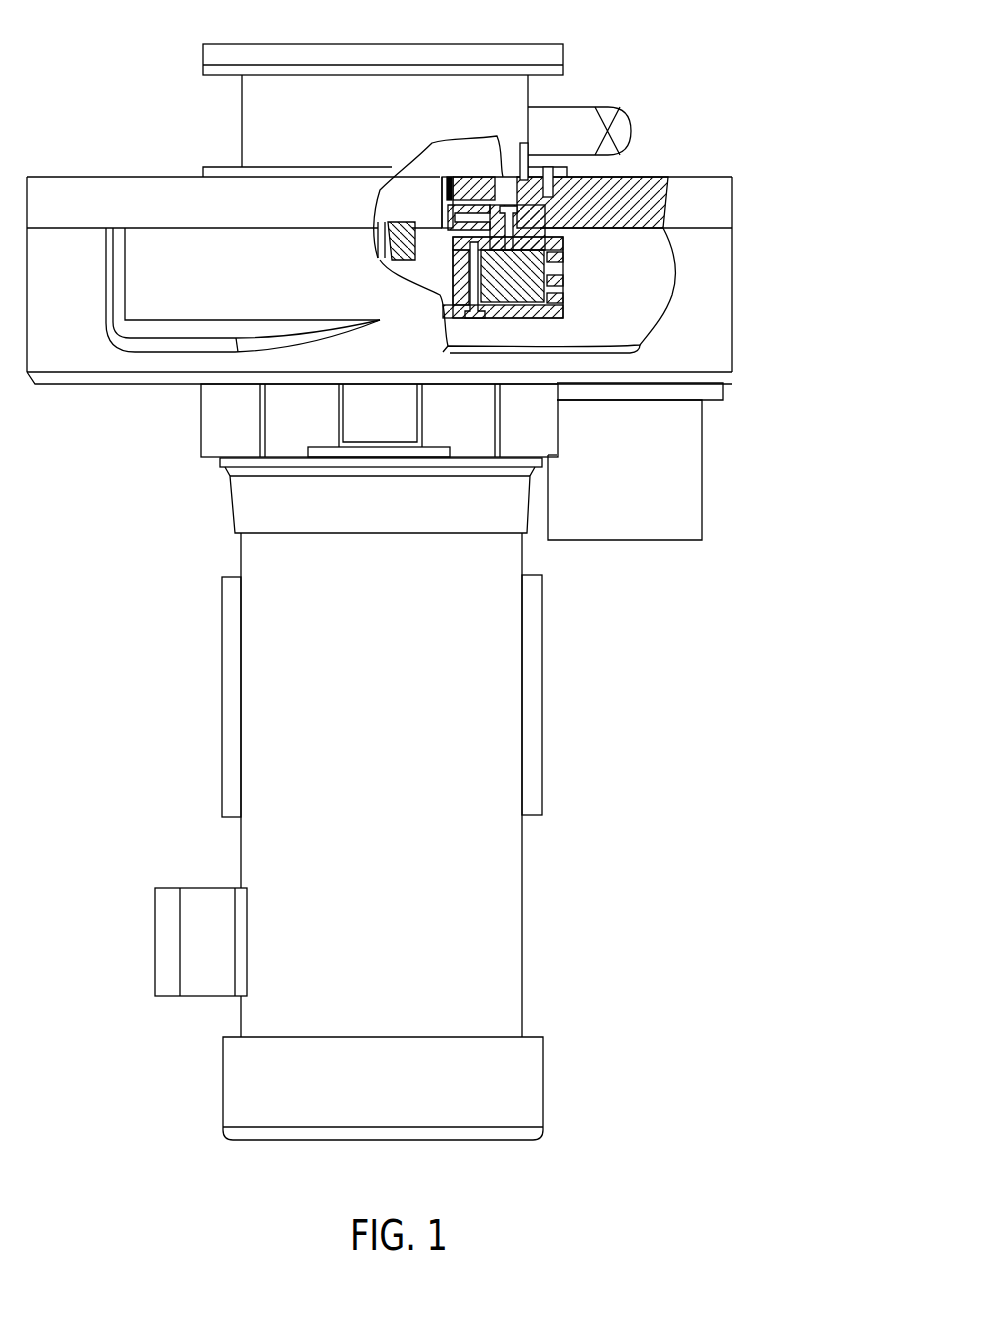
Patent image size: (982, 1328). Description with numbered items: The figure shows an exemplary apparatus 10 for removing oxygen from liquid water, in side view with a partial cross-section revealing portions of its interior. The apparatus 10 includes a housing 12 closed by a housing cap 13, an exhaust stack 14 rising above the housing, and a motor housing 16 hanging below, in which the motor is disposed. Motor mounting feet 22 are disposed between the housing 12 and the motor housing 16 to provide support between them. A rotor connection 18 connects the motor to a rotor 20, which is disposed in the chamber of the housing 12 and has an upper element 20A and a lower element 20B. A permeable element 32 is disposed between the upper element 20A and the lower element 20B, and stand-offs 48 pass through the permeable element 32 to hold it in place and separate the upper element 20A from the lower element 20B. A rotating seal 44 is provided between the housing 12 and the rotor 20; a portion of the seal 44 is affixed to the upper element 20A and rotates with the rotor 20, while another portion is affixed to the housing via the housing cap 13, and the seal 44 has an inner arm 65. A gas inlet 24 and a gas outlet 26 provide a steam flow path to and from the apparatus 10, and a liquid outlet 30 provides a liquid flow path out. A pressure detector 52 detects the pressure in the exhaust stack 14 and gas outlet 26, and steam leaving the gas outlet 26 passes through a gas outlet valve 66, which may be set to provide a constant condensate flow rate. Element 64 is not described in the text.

The apparatus 10 is at (738, 105).
The housing 12 is at (732, 251).
The housing cap 13 is at (732, 199).
The exhaust stack 14 is at (242, 110).
The motor housing 16 is at (522, 855).
The rotor connection 18 is at (378, 430).
The rotor 20 is at (529, 292).
The upper element 20A is at (563, 240).
The lower element 20B is at (563, 315).
The motor mounting feet 22 is at (203, 430).
The gas inlet 24 is at (164, 325).
The gas outlet 26 is at (567, 108).
The liquid outlet 30 is at (705, 514).
The permeable element 32 is at (500, 318).
The rotating seal 44 is at (433, 225).
The stand-offs 48 is at (475, 297).
The pressure detector 52 is at (477, 205).
The retainer 64 is at (387, 187).
The inner arm 65 is at (413, 262).
The gas outlet valve 66 is at (628, 113).